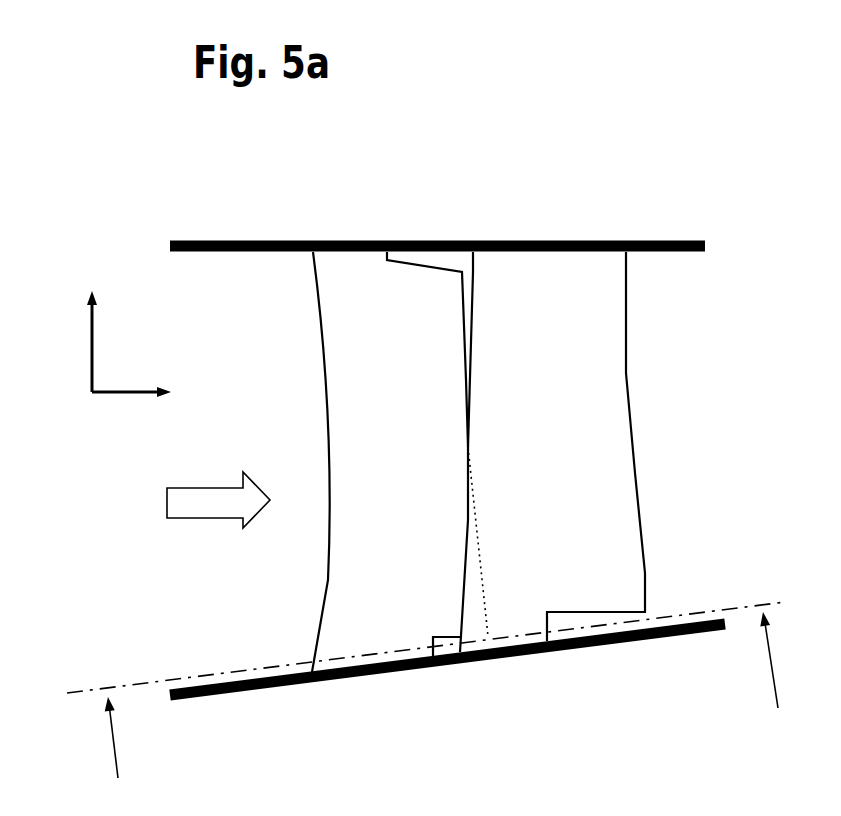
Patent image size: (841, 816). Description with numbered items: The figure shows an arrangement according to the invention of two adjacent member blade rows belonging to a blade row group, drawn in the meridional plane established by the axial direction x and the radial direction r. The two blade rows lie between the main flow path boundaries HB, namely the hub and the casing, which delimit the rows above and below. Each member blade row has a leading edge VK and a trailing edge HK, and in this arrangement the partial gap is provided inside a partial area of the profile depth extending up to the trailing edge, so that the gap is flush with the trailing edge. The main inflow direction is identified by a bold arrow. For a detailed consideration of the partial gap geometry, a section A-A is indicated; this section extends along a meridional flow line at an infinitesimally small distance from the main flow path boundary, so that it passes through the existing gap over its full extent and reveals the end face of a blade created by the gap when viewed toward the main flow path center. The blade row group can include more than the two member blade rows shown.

The main flow path boundary HB is at (447, 451).
The section A- A is at (426, 692).
The radial direction r is at (94, 277).
The axial direction x is at (198, 397).